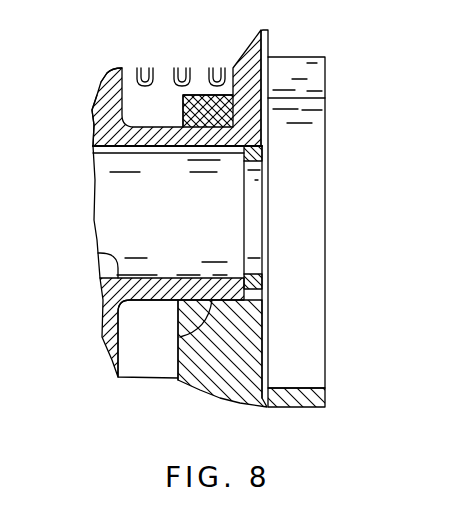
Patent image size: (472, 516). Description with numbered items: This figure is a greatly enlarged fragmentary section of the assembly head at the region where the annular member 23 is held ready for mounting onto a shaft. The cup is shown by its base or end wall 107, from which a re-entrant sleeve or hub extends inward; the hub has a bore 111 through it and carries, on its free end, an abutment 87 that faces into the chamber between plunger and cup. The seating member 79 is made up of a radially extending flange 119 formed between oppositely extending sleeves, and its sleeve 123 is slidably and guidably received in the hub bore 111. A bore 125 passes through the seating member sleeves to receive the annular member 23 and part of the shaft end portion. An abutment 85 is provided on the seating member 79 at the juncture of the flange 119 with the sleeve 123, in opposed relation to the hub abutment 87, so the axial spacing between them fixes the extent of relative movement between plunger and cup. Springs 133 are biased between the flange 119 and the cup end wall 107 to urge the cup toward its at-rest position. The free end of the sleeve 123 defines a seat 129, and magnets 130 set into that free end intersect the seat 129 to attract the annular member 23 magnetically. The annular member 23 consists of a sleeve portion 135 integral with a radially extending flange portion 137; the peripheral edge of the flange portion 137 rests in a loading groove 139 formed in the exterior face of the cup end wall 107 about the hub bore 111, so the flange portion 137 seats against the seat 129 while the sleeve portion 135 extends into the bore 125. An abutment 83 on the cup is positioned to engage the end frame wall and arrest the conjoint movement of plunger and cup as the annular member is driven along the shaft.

The annular member 23 is at (242, 233).
The seating member 79 is at (102, 128).
The abutment 83 is at (313, 400).
The abutment 85 is at (112, 95).
The abutment 87 is at (183, 100).
The cup end wall 107 is at (265, 41).
The hub bore 111 is at (187, 332).
The flange 119 is at (110, 340).
The sleeve 123 is at (142, 140).
The bore 125 is at (100, 255).
The seat 129 is at (247, 300).
The magnets 130 is at (150, 302).
The springs 133 is at (217, 72).
The sleeve portion 135 is at (243, 155).
The flange portion 137 is at (268, 147).
The loading groove 139 is at (268, 66).